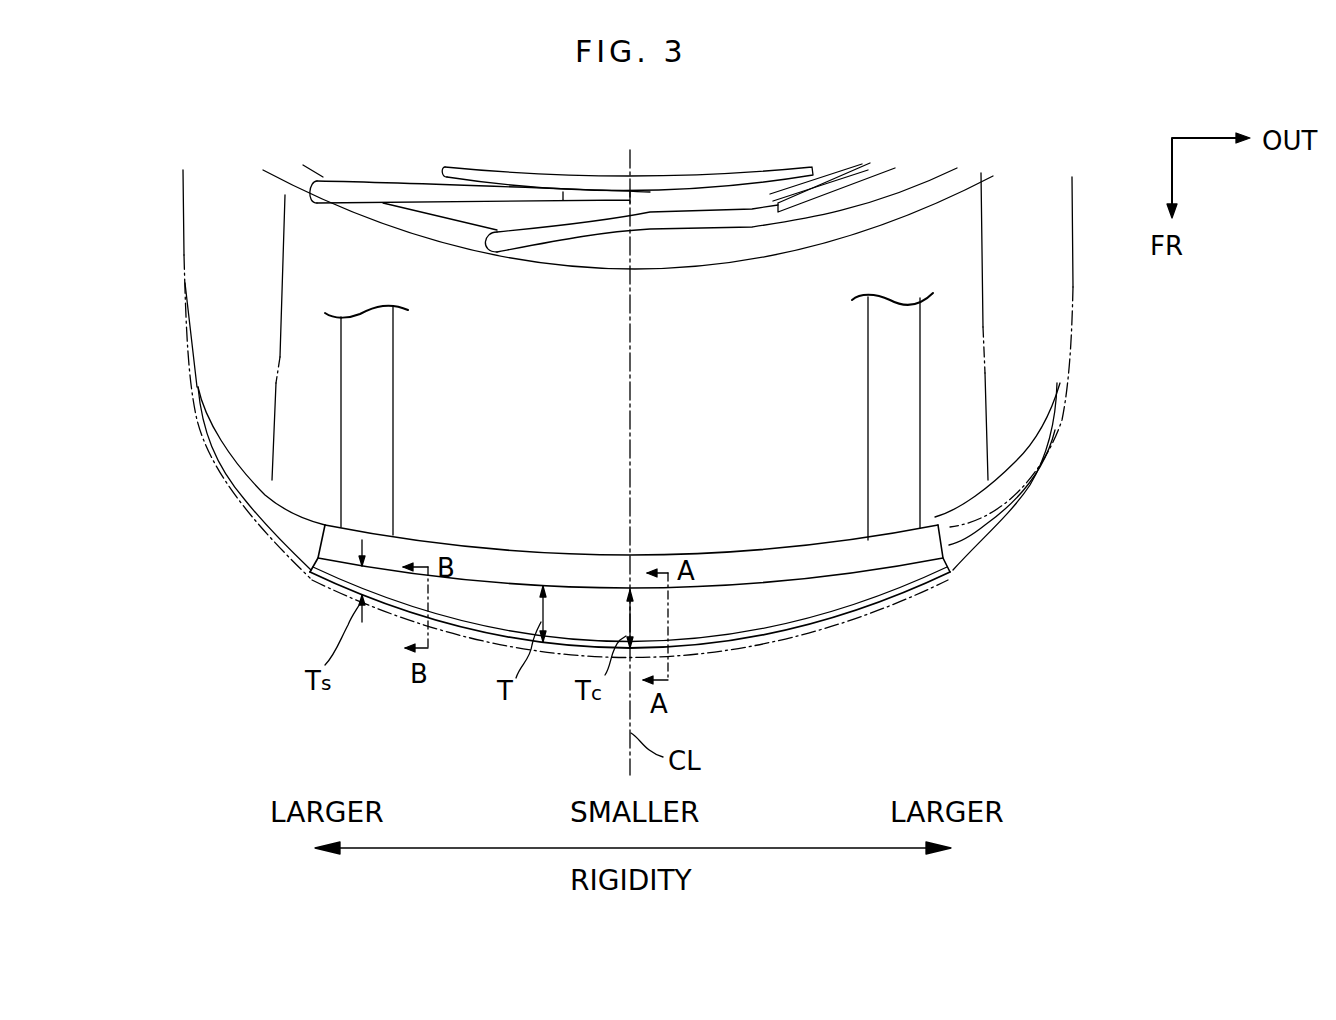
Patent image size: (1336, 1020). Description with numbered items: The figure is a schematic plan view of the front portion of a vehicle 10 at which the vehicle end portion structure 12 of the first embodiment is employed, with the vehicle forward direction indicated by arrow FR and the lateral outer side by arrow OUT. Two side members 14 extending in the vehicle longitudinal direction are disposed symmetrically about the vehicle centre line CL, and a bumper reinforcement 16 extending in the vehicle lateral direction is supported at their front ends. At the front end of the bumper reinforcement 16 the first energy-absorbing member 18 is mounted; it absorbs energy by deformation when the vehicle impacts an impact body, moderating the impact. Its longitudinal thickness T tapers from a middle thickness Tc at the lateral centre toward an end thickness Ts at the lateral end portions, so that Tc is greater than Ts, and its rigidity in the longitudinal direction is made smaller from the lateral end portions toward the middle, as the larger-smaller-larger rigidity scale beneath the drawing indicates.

The vehicle 10 is at (180, 232).
The vehicle end portion structure 12 is at (630, 619).
The side member 14 is at (395, 435).
The bumper reinforcement 16 is at (538, 552).
The first energy-absorbing member 18 is at (487, 640).